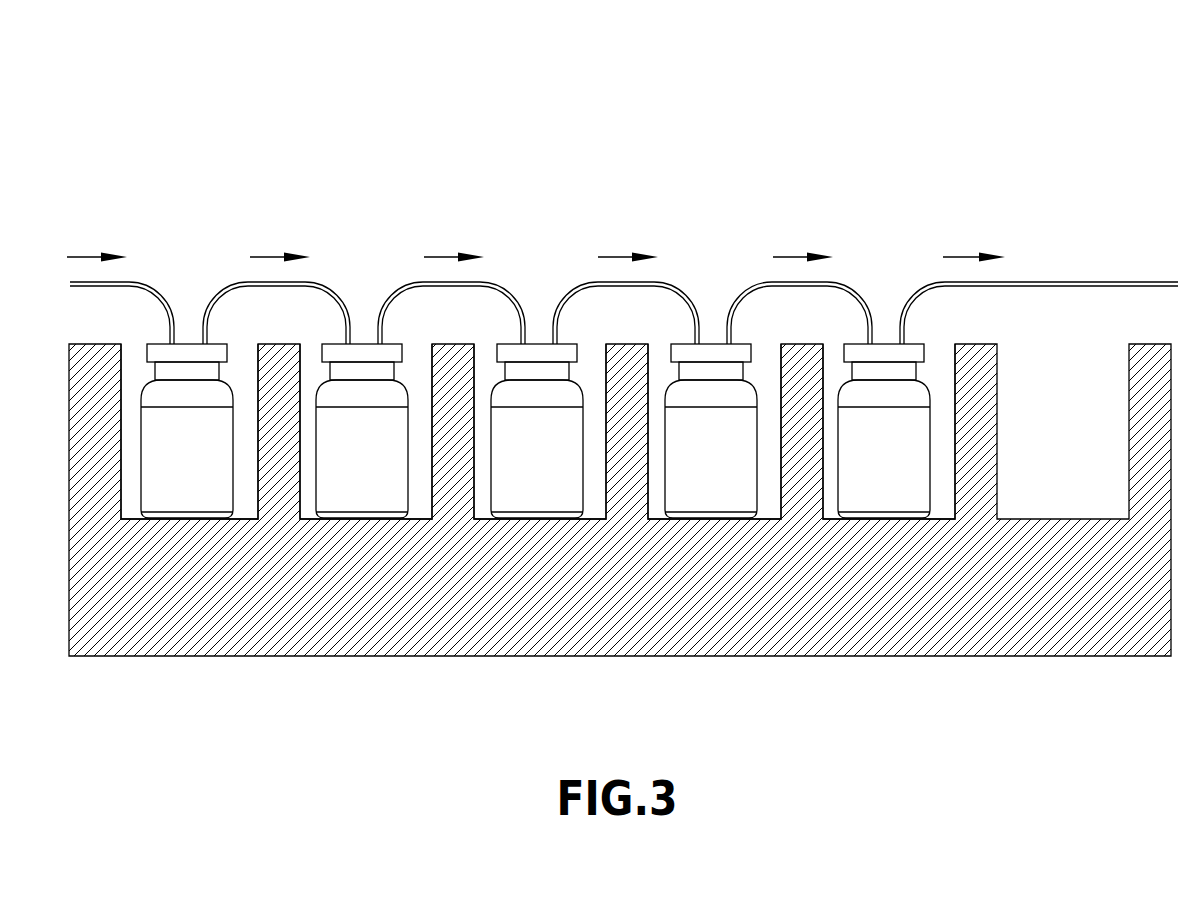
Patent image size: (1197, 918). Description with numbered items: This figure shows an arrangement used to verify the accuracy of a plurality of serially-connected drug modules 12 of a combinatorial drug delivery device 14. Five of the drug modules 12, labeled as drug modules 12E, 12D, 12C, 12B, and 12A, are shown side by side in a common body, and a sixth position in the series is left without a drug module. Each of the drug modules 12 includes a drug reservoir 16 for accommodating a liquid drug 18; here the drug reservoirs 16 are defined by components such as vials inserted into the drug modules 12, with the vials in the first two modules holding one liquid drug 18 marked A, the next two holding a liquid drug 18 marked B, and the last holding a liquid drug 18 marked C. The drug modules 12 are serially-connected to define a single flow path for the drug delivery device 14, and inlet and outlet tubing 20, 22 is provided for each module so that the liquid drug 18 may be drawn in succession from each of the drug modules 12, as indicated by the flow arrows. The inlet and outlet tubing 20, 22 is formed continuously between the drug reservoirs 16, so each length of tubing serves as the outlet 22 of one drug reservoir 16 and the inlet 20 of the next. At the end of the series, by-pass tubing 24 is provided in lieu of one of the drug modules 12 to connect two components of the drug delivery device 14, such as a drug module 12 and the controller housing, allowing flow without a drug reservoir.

The drug modules 12 is at (620, 544).
The drug module 12A is at (923, 656).
The drug module 12B is at (713, 656).
The drug module 12C is at (540, 656).
The drug module 12D is at (348, 656).
The drug module 12E is at (185, 656).
The combinatorial drug delivery device 14 is at (945, 132).
The drug reservoir 16 is at (187, 427).
The liquid drug 18 is at (174, 501).
The inlet tubing 20 is at (141, 283).
The outlet tubing 22 is at (325, 291).
The by-pass tubing 24 is at (937, 287).